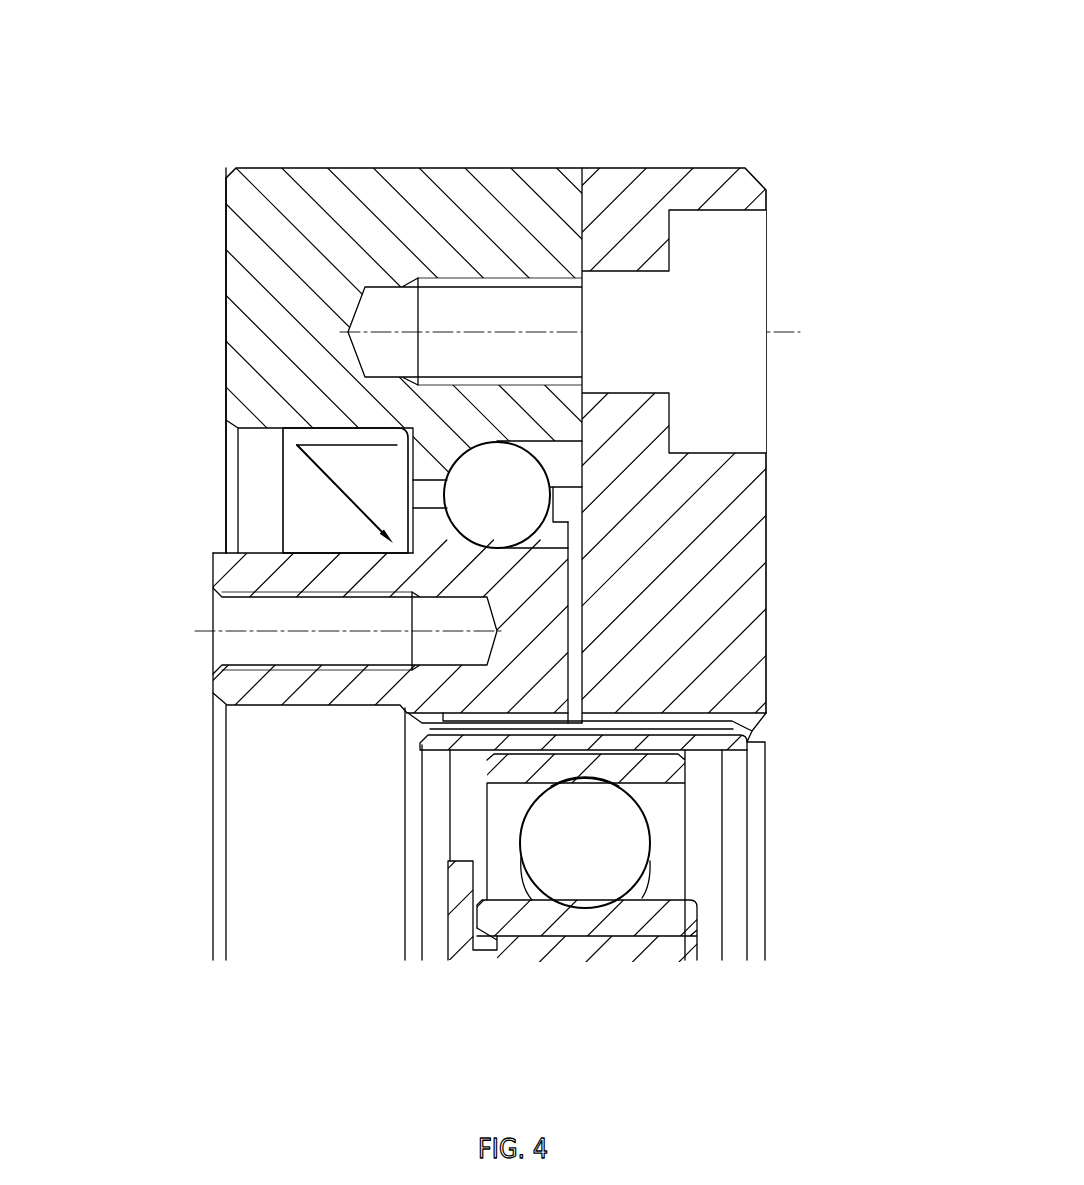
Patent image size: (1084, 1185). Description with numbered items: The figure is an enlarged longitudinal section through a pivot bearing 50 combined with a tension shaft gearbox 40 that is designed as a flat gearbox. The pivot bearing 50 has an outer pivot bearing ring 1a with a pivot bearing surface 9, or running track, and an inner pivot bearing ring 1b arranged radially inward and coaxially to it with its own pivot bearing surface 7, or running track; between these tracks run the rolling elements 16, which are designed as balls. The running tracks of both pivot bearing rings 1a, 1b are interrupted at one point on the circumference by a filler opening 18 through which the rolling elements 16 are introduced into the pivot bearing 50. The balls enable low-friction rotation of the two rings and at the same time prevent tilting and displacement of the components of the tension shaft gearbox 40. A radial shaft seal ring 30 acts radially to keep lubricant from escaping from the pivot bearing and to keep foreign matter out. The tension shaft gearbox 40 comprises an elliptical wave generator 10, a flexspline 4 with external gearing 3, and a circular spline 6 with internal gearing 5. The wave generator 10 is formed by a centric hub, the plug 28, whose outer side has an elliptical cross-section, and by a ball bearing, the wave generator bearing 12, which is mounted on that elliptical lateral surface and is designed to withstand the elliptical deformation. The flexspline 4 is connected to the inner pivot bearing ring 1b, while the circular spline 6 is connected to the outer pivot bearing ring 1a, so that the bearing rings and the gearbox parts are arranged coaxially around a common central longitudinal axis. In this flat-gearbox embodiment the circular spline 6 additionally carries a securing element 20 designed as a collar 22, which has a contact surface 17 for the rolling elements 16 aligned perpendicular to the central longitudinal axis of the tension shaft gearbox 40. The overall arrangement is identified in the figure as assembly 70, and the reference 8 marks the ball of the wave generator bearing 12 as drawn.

The outer pivot bearing ring 1a is at (340, 255).
The inner pivot bearing ring 1b is at (425, 578).
The external gearing 3 is at (747, 718).
The flexspline 4 is at (732, 875).
The internal gearing 5 is at (728, 731).
The circular spline 6 is at (703, 505).
The pivot bearing surface 7 is at (463, 537).
The bearing ball 8 is at (585, 843).
The pivot bearing surface 9 is at (473, 448).
The wave generator 10 is at (657, 857).
The wave generator bearing 12 is at (790, 828).
The rolling elements 16 is at (497, 495).
The contact surface 17 is at (563, 454).
The filler opening 18 is at (552, 487).
The securing element 20 is at (683, 609).
The collar 22 is at (567, 500).
The plug 28 is at (548, 948).
The radial shaft seal ring 30 is at (300, 475).
The tension shaft gearbox 40 is at (778, 645).
The pivot bearing 50 is at (203, 230).
The sensor arrangement 70 is at (585, 150).